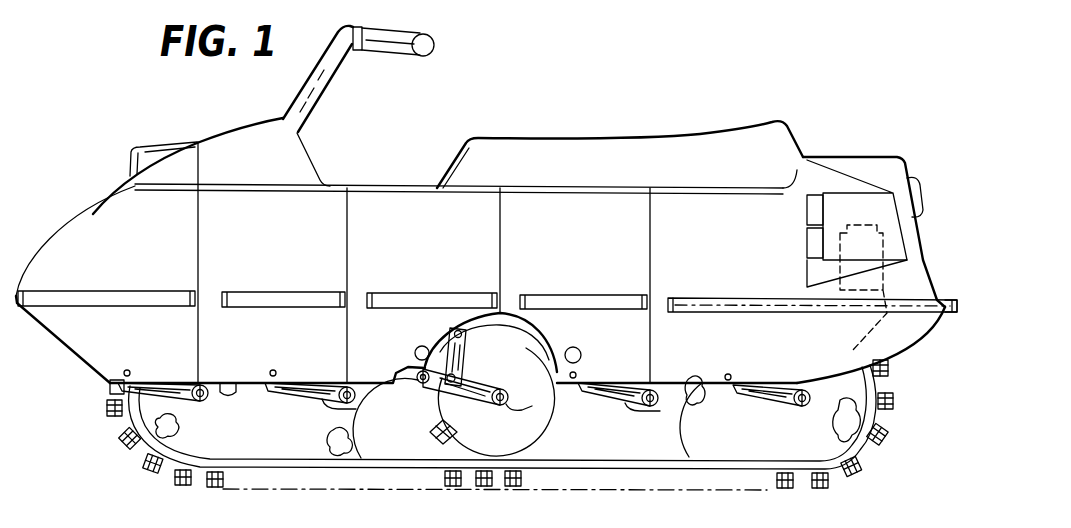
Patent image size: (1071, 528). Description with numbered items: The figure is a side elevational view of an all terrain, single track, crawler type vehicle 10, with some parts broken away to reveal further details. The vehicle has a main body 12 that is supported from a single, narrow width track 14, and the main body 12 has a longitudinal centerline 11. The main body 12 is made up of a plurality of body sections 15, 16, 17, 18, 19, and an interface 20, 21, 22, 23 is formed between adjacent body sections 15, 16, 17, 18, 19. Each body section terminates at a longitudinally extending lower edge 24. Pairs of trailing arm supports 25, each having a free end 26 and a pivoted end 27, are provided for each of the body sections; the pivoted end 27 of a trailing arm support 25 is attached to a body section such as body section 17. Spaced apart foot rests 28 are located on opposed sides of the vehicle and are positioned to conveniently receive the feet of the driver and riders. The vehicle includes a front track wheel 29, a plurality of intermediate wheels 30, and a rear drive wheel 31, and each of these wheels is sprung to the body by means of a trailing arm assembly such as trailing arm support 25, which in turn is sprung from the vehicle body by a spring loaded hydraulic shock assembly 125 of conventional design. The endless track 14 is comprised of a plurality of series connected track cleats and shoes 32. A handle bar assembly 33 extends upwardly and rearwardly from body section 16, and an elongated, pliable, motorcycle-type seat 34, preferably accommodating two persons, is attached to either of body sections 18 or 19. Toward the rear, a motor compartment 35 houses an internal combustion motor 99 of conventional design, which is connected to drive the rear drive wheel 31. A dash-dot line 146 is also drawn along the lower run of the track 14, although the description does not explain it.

The crawler type vehicle 10 is at (143, 103).
The longitudinal centerline 11 is at (948, 290).
The main body 12 is at (72, 220).
The track 14 is at (117, 430).
The body section 15 is at (152, 261).
The body section 16 is at (296, 261).
The body section 17 is at (440, 261).
The body section 18 is at (596, 261).
The body section 19 is at (742, 262).
The interface 20 is at (200, 202).
The interface 21 is at (347, 205).
The interface 22 is at (500, 205).
The interface 23 is at (652, 205).
The lower edge 24 is at (237, 378).
The trailing arm support 25 is at (300, 403).
The free end 26 is at (512, 400).
The pivoted end 27 is at (407, 380).
The foot rest 28 is at (422, 345).
The front track wheel 29 is at (147, 457).
The intermediate wheel 30 is at (435, 442).
The rear drive wheel 31 is at (855, 457).
The track cleats and shoes 32 is at (213, 490).
The handle bar assembly 33 is at (447, 38).
The motorcycle-type seat 34 is at (570, 137).
The motor compartment 35 is at (882, 160).
The internal combustion motor 99 is at (853, 223).
The spring loaded hydraulic shock assembly 125 is at (472, 350).
The ground line of track 146 is at (283, 462).